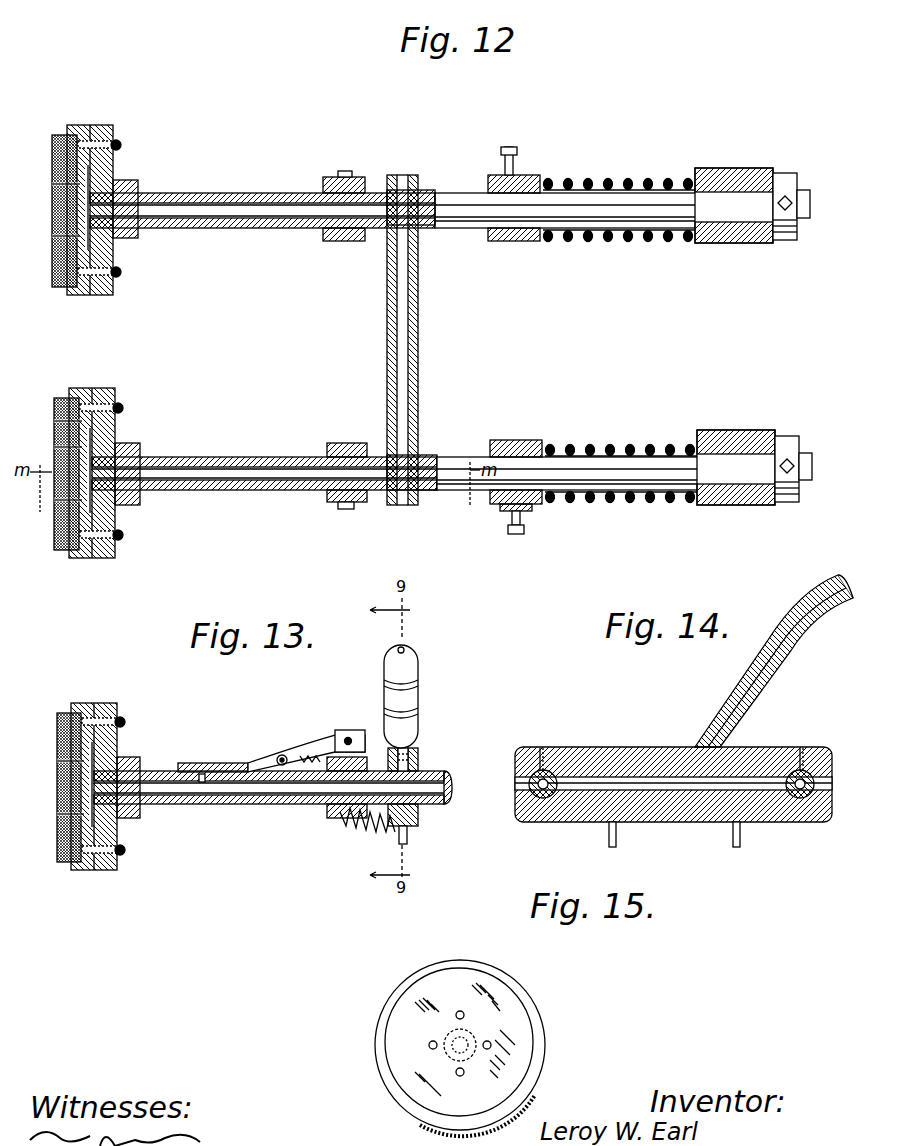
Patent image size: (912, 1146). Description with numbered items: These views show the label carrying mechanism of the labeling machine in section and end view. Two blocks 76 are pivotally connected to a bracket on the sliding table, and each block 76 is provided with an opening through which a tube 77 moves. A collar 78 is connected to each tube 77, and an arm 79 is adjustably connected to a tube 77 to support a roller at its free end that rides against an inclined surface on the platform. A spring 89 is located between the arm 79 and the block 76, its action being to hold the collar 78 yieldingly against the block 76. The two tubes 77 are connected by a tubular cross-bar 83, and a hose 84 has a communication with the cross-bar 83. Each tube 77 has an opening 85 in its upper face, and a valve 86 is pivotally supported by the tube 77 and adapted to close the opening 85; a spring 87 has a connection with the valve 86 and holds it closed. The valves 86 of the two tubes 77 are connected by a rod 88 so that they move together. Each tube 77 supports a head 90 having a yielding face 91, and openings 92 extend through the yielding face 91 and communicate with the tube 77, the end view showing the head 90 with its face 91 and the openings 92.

In FIG. 12, the block 76 is at (738, 170).
In FIG. 12, the tube 77 is at (443, 210).
In FIG. 13, the tube 77 is at (273, 796).
In FIG. 14, the tube 77 is at (832, 781).
In FIG. 12, the collar 78 is at (790, 170).
In FIG. 12, the arm 79 is at (516, 241).
In FIG. 12, the tubular cross-bar 83 is at (418, 340).
In FIG. 13, the tubular cross-bar 83 is at (418, 751).
In FIG. 14, the tubular cross-bar 83 is at (655, 748).
In FIG. 14, the hose 84 is at (822, 608).
In FIG. 13, the opening 85 is at (202, 783).
In FIG. 13, the valve 86 is at (262, 760).
In FIG. 13, the spring 87 is at (362, 826).
In FIG. 13, the rod 88 is at (283, 754).
In FIG. 12, the spring 89 is at (623, 184).
In FIG. 12, the head 90 is at (99, 127).
In FIG. 13, the head 90 is at (104, 704).
In FIG. 15, the head 90 is at (522, 986).
In FIG. 12, the yielding face 91 is at (54, 262).
In FIG. 13, the yielding face 91 is at (58, 728).
In FIG. 15, the yielding face 91 is at (522, 1024).
In FIG. 12, the openings 92 is at (53, 185).
In FIG. 13, the openings 92 is at (57, 761).
In FIG. 15, the openings 92 is at (470, 1004).